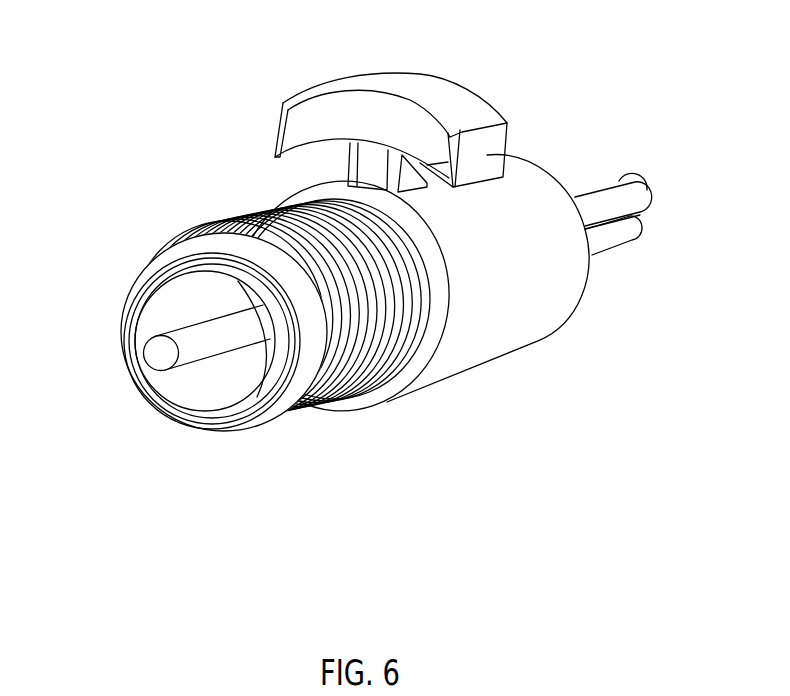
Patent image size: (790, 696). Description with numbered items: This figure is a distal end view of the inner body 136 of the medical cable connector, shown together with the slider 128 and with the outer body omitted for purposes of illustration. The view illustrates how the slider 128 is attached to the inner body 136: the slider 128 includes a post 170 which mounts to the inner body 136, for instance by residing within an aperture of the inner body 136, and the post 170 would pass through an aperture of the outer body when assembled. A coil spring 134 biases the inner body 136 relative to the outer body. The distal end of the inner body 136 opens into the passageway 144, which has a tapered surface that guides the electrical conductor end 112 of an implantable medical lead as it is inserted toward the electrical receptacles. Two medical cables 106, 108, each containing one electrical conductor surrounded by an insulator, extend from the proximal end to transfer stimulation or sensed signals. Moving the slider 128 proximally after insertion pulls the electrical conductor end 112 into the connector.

The medical cable 106 is at (602, 202).
The medical cable 108 is at (607, 238).
The electrical conductor end 112 is at (150, 356).
The slider 128 is at (437, 82).
The spring 134 is at (332, 400).
The inner body 136 is at (527, 187).
The passageway 144 is at (203, 390).
The post 170 is at (368, 165).